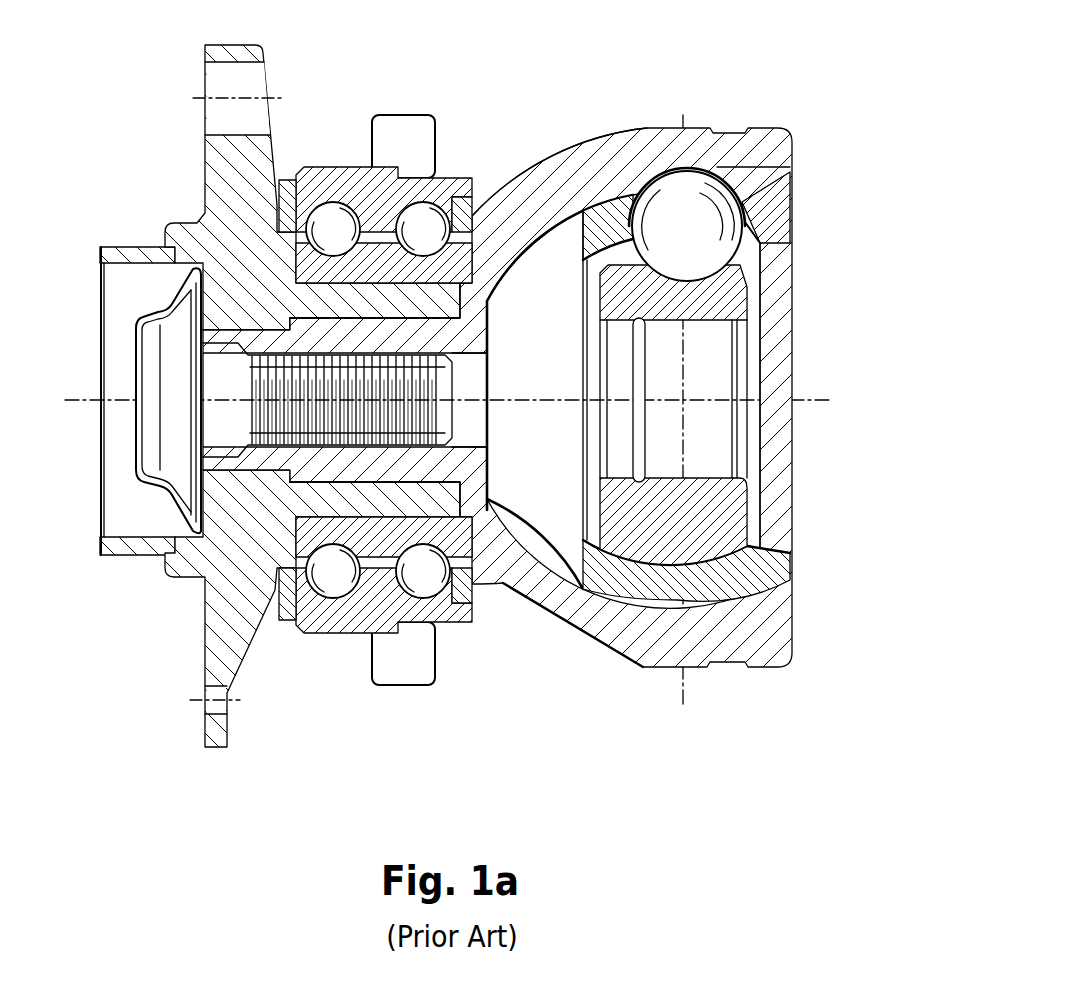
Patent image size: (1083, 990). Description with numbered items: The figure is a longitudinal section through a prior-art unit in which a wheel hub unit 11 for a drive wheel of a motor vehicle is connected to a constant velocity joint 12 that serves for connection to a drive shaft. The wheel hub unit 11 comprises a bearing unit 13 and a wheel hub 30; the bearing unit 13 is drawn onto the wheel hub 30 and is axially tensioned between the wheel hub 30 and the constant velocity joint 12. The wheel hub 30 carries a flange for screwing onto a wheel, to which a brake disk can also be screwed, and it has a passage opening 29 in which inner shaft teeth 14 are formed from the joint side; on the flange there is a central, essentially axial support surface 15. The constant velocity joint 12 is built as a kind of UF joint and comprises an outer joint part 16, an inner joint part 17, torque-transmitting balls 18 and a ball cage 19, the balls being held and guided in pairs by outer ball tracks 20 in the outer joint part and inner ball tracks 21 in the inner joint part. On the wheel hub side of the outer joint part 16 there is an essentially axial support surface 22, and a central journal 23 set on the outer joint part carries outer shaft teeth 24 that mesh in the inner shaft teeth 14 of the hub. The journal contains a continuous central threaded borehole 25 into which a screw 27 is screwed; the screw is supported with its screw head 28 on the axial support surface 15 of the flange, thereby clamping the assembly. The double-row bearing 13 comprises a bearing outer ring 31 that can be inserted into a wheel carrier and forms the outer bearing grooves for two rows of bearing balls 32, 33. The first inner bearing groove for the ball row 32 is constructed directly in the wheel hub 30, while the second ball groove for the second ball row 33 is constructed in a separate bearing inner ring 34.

The wheel hub unit 11 is at (245, 374).
The constant velocity joint 12 is at (531, 334).
The bearing unit 13 is at (424, 343).
The inner shaft teeth 14 is at (195, 328).
The axial support surface 15 is at (198, 312).
The outer joint part 16 is at (757, 138).
The inner joint part 17 is at (720, 303).
The torque-transmitting balls 18 is at (717, 192).
The ball cage 19 is at (778, 230).
The outer ball tracks 20 is at (621, 268).
The inner ball tracks 21 is at (587, 233).
The axial support surface 22 is at (490, 224).
The central journal 23 is at (457, 336).
The outer shaft teeth 24 is at (452, 317).
The central threaded borehole 25 is at (470, 358).
The screw 27 is at (436, 413).
The screw head 28 is at (180, 492).
The passage opening 29 is at (235, 331).
The wheel hub 30 is at (225, 168).
The bearing outer ring 31 is at (351, 176).
The first ball row 32 is at (330, 222).
The second ball row 33 is at (424, 224).
The bearing inner ring 34 is at (458, 263).